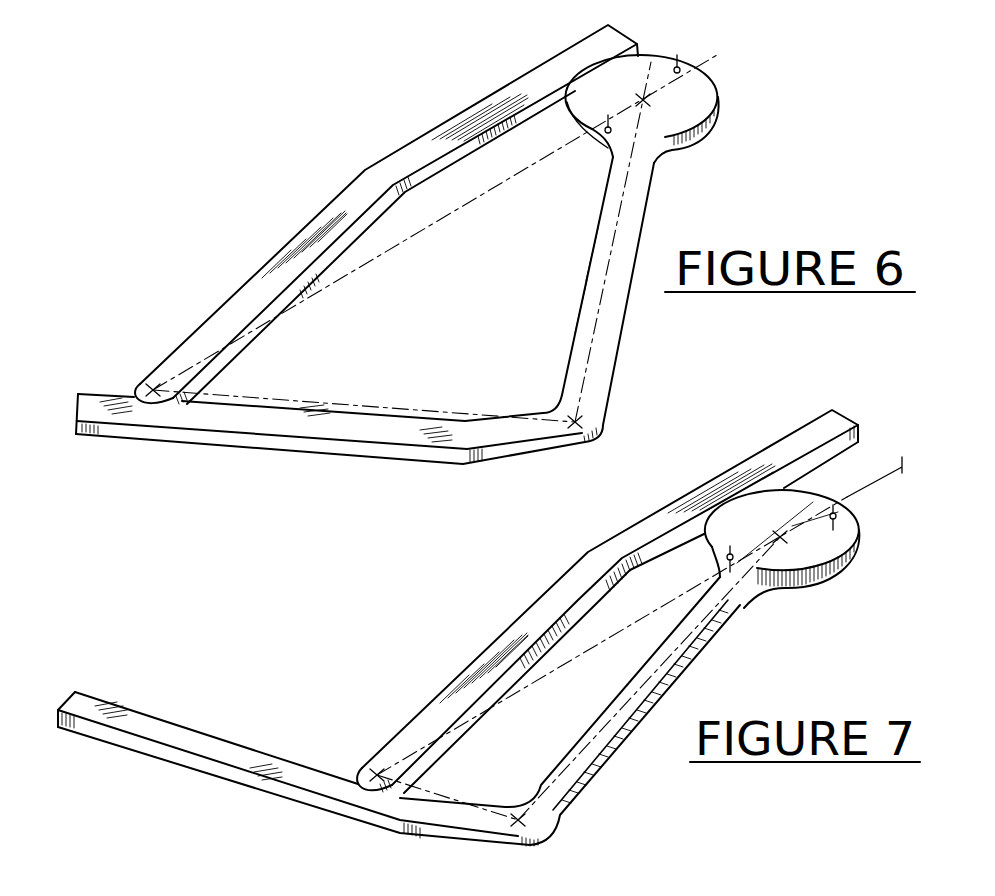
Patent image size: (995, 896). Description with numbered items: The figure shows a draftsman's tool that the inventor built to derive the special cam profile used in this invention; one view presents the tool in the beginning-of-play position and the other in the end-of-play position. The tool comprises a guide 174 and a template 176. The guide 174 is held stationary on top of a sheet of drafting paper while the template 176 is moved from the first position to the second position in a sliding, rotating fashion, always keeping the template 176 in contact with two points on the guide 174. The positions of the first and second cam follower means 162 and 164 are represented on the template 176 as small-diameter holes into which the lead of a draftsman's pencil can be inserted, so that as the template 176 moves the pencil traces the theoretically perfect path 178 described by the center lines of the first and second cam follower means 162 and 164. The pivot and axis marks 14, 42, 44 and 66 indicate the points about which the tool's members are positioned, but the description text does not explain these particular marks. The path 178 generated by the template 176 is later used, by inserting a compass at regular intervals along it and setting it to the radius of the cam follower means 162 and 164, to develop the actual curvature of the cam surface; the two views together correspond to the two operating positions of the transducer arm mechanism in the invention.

In FIG. 6, the first pivot 14 is at (155, 385).
In FIG. 6, the hinge axis 42 is at (693, 109).
In FIG. 7, the hinge axis 42 is at (782, 549).
In FIG. 6, the hinge axis 44 is at (655, 104).
In FIG. 7, the hinge axis 44 is at (782, 549).
In FIG. 6, the second pivot 66 is at (565, 418).
In FIG. 6, the first cam follower means 162 is at (607, 148).
In FIG. 6, the second cam follower means 164 is at (670, 60).
In FIG. 6, the guide 174 is at (490, 100).
In FIG. 7, the guide 174 is at (607, 601).
In FIG. 6, the template 176 is at (352, 458).
In FIG. 7, the template 176 is at (399, 711).
In FIG. 7, the theoretically perfect path 178 is at (857, 493).